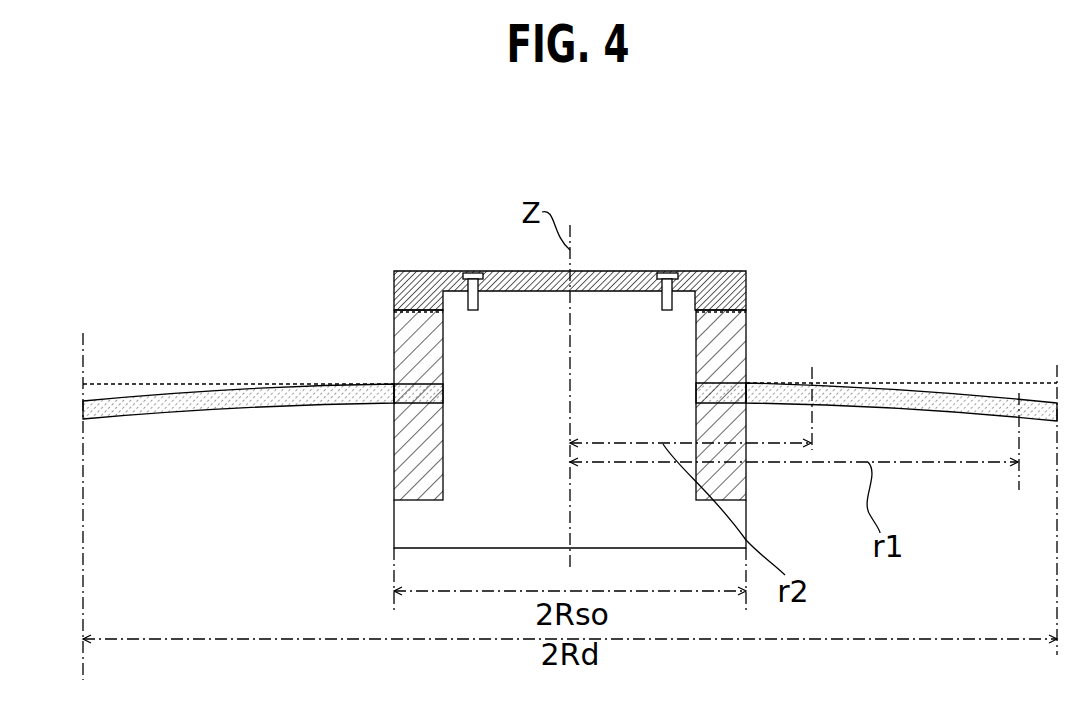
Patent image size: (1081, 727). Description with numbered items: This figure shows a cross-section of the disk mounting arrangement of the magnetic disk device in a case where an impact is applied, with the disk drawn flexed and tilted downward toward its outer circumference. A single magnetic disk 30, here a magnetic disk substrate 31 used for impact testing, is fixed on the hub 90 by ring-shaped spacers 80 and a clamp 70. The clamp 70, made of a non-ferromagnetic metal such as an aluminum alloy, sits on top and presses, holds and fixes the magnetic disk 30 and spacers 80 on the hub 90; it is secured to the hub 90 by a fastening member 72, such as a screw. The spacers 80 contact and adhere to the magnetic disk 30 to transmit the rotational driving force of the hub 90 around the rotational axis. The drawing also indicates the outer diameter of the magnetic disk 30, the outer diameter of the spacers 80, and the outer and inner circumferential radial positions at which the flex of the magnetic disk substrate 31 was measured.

The clamp 70 is at (418, 271).
The fastening member 72 is at (665, 271).
The spacer 80 is at (746, 360).
The magnetic disk 30 is at (570, 368).
The magnetic disk substrate 31 is at (865, 385).
The hub 90 is at (495, 548).